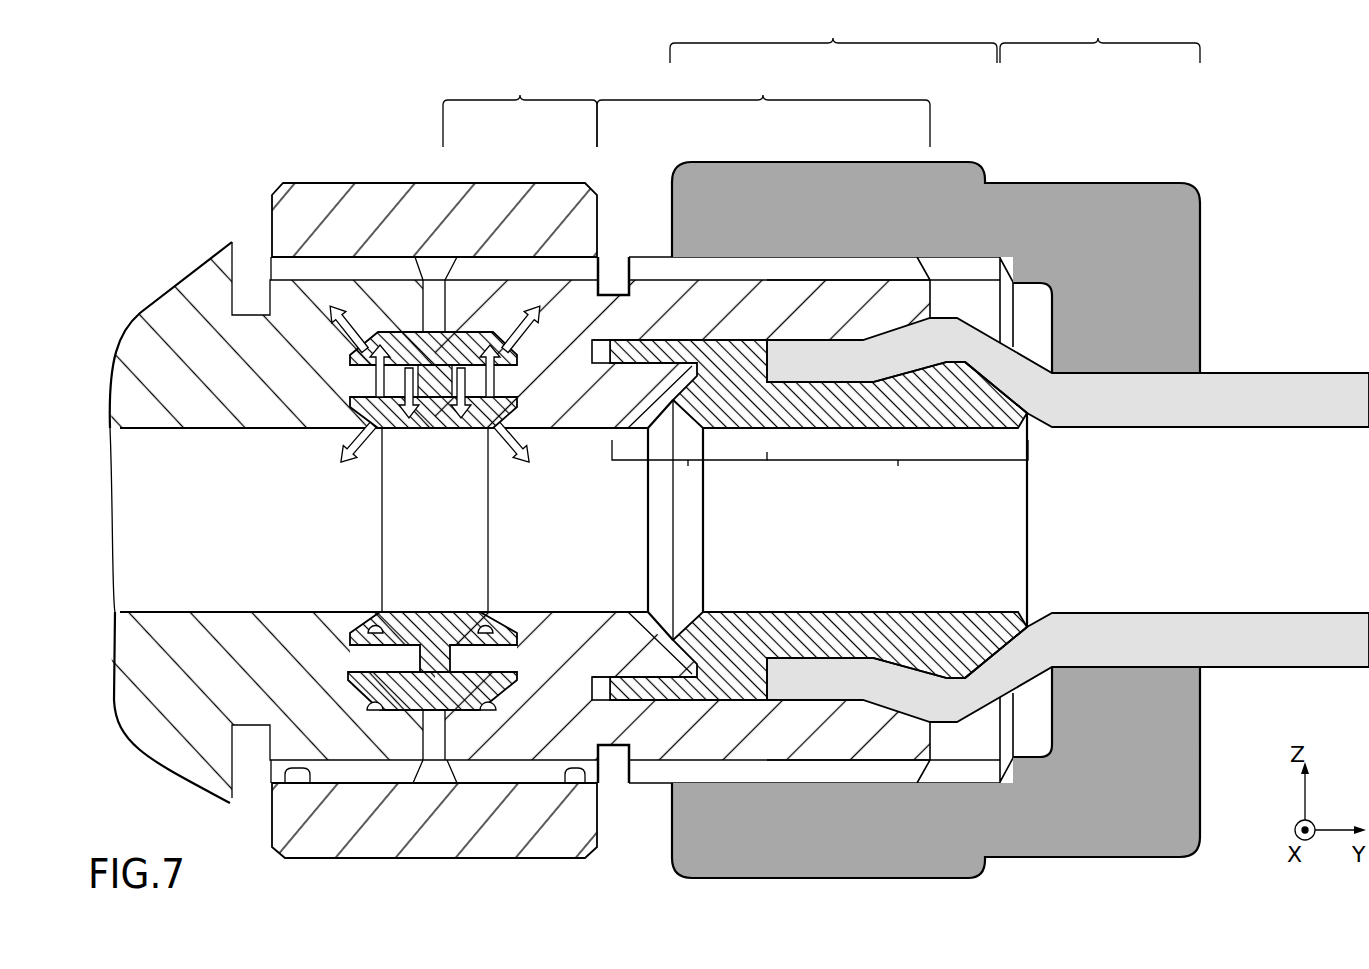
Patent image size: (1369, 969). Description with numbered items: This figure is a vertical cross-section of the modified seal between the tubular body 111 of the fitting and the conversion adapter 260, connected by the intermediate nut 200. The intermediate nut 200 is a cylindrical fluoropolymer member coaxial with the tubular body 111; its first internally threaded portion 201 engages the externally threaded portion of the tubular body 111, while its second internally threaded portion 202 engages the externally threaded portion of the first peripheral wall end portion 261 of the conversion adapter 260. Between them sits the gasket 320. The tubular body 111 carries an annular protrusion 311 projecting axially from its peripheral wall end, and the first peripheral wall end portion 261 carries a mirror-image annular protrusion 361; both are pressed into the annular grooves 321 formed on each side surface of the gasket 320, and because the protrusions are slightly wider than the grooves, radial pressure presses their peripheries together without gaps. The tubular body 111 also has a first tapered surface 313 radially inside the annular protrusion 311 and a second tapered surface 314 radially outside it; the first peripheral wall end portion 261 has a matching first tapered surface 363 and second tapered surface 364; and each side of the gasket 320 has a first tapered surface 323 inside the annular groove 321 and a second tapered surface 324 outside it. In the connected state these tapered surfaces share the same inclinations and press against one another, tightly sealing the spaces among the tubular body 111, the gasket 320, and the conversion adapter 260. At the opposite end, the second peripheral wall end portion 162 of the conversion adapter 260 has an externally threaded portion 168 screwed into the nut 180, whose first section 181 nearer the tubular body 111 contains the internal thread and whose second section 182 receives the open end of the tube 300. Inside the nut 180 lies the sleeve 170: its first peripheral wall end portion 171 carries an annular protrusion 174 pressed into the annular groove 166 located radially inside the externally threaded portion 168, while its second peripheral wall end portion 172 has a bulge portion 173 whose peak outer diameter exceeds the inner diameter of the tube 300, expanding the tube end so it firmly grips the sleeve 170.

The tubular body 111 is at (322, 270).
The intermediate nut 200 is at (367, 172).
The first internally threaded portion 201 is at (282, 848).
The second internally threaded portion 202 is at (580, 790).
The conversion adapter 260 is at (612, 282).
The first peripheral wall end portion 261 is at (520, 108).
The second peripheral wall end portion 162 is at (805, 426).
The sleeve 170 is at (668, 326).
The first peripheral wall end portion 171 is at (689, 520).
The second peripheral wall end portion 172 is at (897, 520).
The bulge portion 173 is at (945, 702).
The annular protrusion 174 is at (656, 703).
The annular groove 166 is at (600, 762).
The externally threaded portion 168 is at (833, 762).
The nut 180 is at (1138, 170).
The first section 181 is at (833, 446).
The second section 182 is at (1092, 436).
The tube 300 is at (980, 312).
The gasket 320 is at (436, 318).
The annular groove 321 is at (505, 625).
The first tapered surface 323 is at (505, 405).
The second tapered surface 324 is at (515, 350).
The annular protrusion 311 is at (402, 665).
The first tapered surface 313 is at (382, 607).
The second tapered surface 314 is at (382, 700).
The annular protrusion 361 is at (472, 665).
The first tapered surface 363 is at (488, 607).
The second tapered surface 364 is at (488, 708).